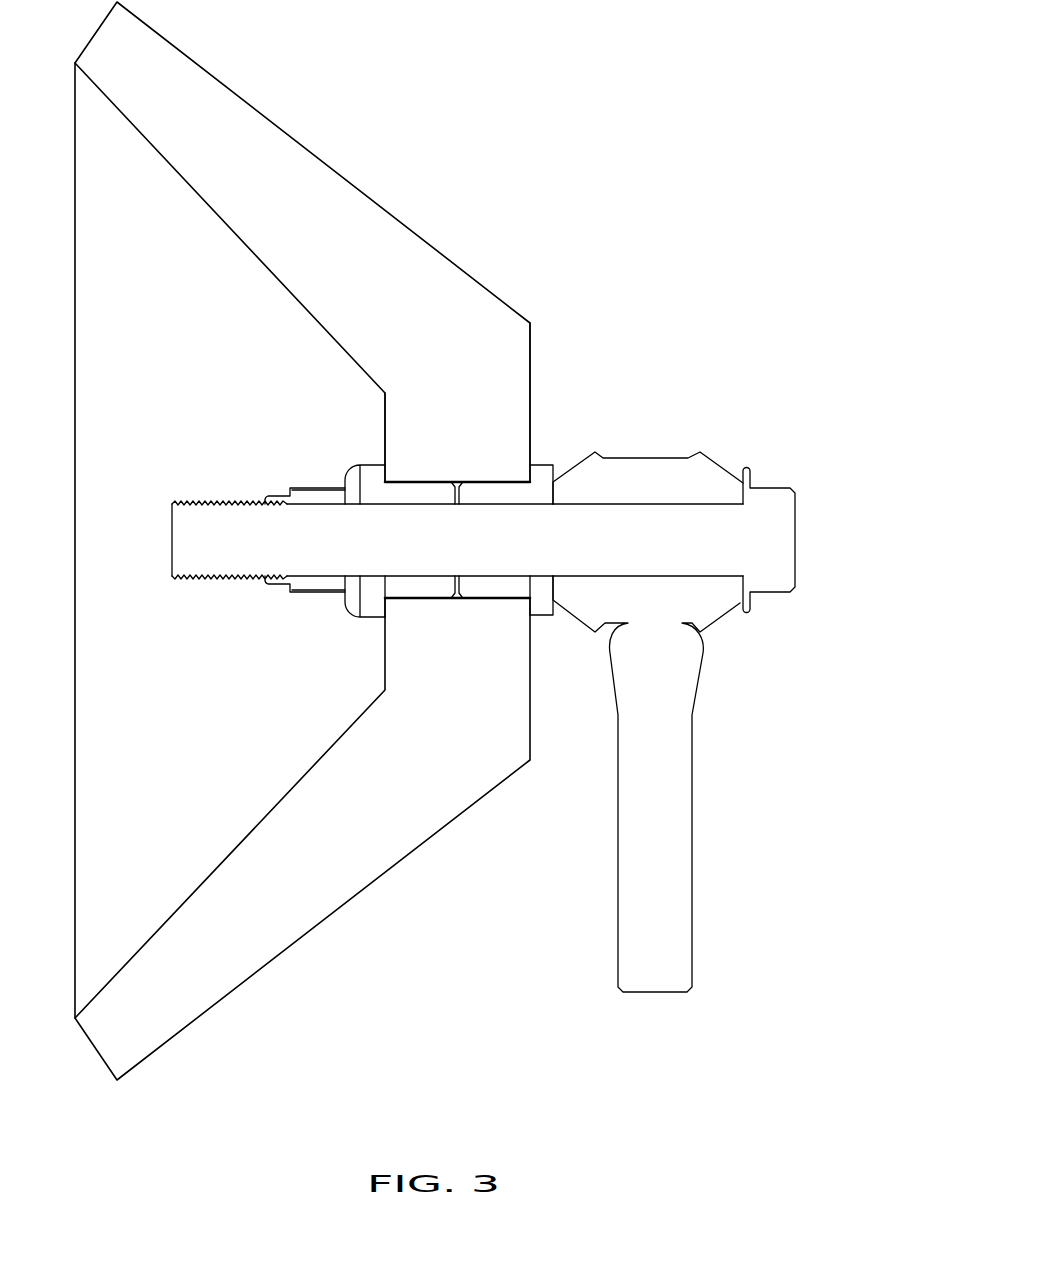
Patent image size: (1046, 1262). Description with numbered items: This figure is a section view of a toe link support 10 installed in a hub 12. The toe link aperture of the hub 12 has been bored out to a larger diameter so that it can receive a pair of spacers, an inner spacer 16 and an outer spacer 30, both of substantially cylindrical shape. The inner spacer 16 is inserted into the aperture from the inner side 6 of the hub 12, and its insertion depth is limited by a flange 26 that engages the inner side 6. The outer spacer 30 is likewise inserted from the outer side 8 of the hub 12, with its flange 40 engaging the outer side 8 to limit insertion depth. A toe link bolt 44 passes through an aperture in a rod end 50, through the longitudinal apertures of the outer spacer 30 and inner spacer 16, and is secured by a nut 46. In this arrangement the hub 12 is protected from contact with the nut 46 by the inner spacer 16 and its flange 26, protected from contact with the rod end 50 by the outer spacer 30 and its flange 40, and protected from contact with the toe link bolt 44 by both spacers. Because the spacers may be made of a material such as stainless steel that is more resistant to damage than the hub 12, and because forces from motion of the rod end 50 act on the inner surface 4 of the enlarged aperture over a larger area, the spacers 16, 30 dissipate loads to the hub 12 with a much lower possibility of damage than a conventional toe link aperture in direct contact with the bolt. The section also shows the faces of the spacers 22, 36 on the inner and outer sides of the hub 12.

The toe link support 10 is at (613, 110).
The hub 12 is at (330, 197).
The inner surface 4 is at (470, 488).
The inner side 6 is at (385, 431).
The outer side 8 is at (530, 431).
The inner spacer 16 is at (383, 602).
The nut face 22 is at (418, 600).
The flange 26 is at (372, 480).
The outer spacer 30 is at (508, 587).
The nut face 36 is at (478, 600).
The flange 40 is at (545, 475).
The toe link bolt 44 is at (770, 543).
The nut 46 is at (288, 497).
The rod end 50 is at (662, 475).